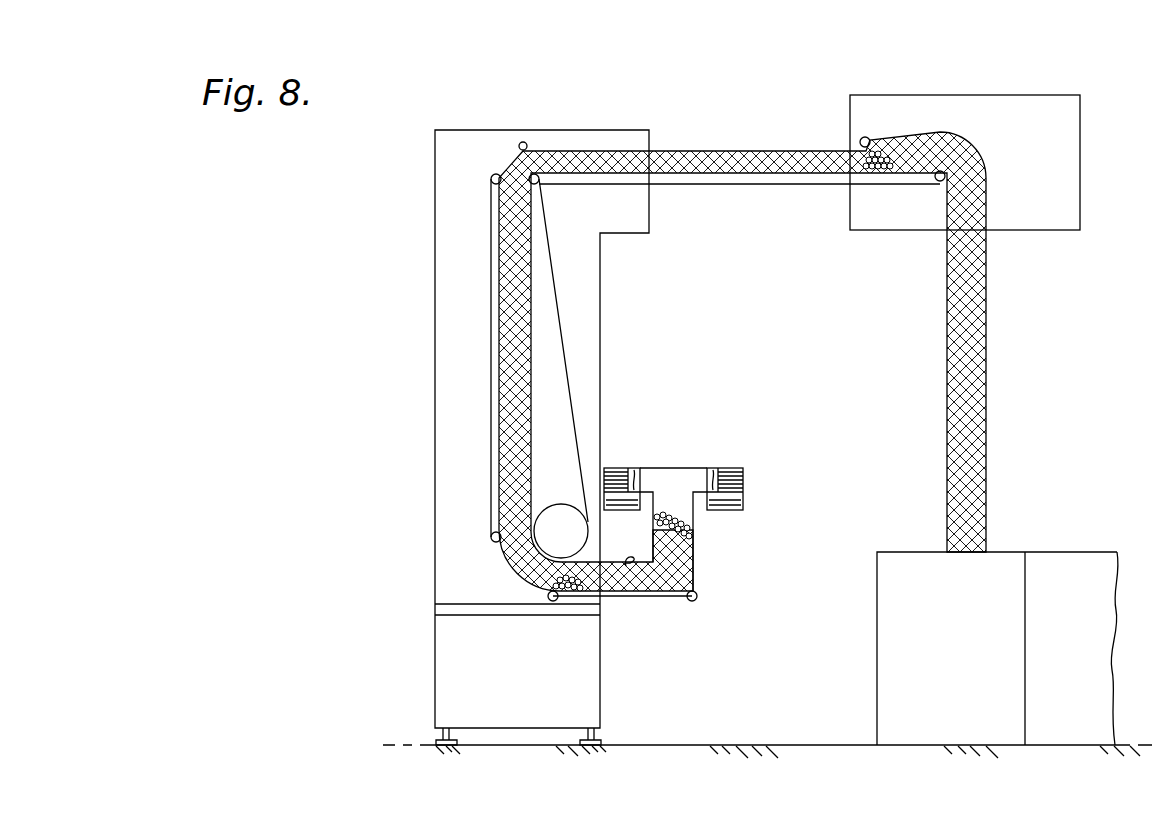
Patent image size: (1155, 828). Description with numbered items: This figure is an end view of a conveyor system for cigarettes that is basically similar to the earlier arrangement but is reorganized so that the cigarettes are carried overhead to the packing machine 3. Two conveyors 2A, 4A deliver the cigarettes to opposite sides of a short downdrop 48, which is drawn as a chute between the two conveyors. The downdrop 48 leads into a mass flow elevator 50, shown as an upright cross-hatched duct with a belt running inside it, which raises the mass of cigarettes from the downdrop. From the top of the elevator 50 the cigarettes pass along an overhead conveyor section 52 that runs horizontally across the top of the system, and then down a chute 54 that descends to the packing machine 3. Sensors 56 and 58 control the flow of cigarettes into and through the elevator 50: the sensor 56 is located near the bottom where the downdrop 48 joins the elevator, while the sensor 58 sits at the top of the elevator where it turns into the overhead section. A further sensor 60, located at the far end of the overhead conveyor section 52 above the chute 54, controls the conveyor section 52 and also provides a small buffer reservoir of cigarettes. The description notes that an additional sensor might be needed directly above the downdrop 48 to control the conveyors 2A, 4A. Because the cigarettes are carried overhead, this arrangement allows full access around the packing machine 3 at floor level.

The cigarette packing machine 3 is at (962, 648).
The conveyor 2A is at (650, 507).
The conveyor 4A is at (738, 510).
The downdrop 48 is at (693, 555).
The mass flow elevator 50 is at (720, 361).
The overhead conveyor section 52 is at (720, 361).
The chute 54 is at (499, 384).
The sensor 56 is at (628, 562).
The sensor 58 is at (523, 142).
The sensor 60 is at (870, 138).